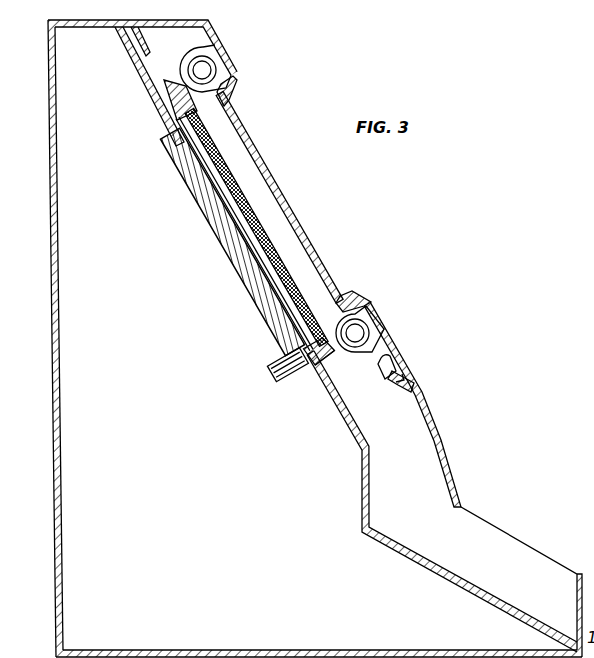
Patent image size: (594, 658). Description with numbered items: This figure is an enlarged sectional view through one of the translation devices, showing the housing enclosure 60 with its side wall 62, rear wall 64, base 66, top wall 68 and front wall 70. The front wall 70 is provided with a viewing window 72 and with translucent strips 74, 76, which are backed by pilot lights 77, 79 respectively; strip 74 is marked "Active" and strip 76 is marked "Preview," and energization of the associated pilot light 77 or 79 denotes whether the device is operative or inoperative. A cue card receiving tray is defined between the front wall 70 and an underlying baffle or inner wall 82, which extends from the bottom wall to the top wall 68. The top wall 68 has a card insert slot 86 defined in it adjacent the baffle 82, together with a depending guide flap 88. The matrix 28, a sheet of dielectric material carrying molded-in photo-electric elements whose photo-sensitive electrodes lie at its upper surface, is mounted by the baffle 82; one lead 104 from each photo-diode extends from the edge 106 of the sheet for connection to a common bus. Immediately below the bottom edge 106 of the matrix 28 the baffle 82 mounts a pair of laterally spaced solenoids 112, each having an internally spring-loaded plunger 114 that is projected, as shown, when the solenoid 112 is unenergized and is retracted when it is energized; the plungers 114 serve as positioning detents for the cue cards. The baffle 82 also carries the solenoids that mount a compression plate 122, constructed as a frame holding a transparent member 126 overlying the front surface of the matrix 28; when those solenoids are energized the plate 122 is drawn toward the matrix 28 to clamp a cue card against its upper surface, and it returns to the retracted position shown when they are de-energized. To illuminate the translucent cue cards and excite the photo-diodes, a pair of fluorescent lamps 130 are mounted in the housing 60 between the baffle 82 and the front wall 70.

The housing enclosure 60 is at (297, 328).
The side wall 62 is at (41, 338).
The rear wall 64 is at (55, 333).
The base 66 is at (209, 650).
The top wall 68 is at (102, 19).
The front wall 70 is at (231, 82).
The viewing window 72 is at (305, 251).
The translucent strip 74 is at (428, 357).
The translucent strip 76 is at (402, 371).
The pilot light 77 is at (403, 399).
The pilot light 79 is at (384, 366).
The baffle 82 is at (362, 503).
The card insert slot 86 is at (120, 26).
The guide flap 88 is at (146, 42).
The matrix 28 is at (205, 222).
The lead 104 is at (173, 80).
The edge 106 is at (284, 356).
The solenoid 112 is at (300, 366).
The plunger 114 is at (312, 366).
The compression plate 122 is at (259, 206).
The transparent member 126 is at (251, 247).
The fluorescent lamp 130 is at (204, 68).